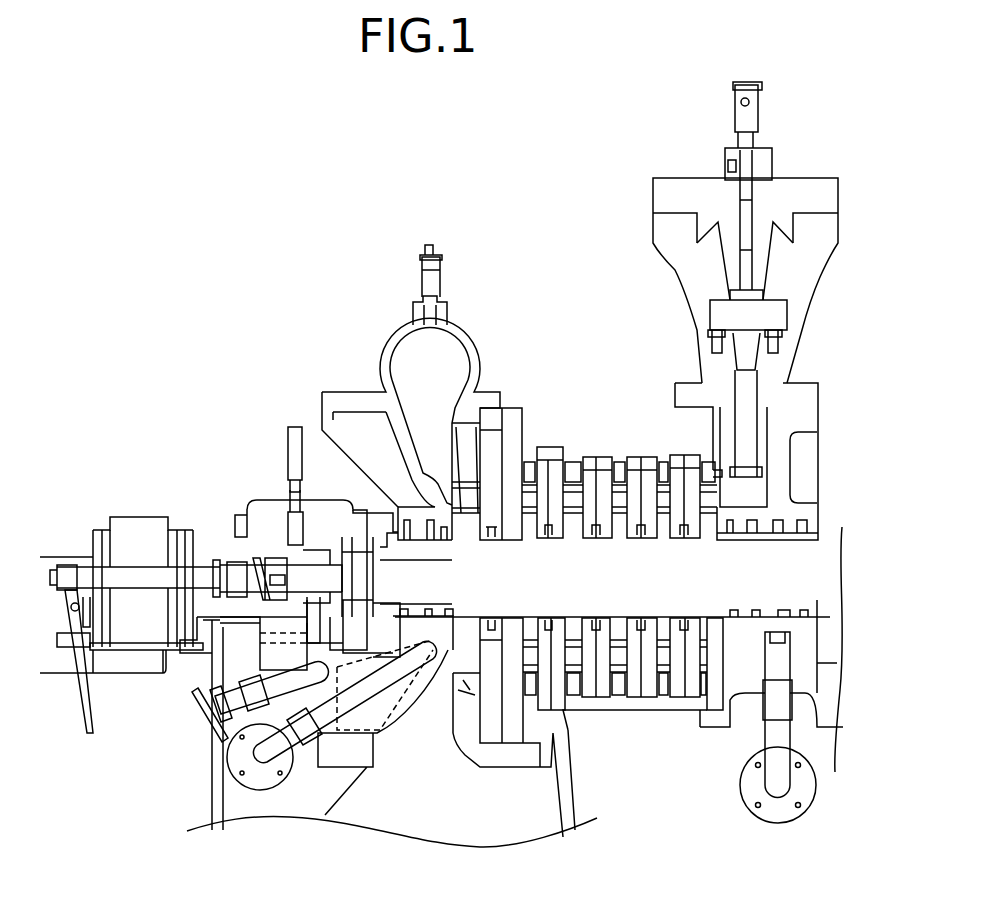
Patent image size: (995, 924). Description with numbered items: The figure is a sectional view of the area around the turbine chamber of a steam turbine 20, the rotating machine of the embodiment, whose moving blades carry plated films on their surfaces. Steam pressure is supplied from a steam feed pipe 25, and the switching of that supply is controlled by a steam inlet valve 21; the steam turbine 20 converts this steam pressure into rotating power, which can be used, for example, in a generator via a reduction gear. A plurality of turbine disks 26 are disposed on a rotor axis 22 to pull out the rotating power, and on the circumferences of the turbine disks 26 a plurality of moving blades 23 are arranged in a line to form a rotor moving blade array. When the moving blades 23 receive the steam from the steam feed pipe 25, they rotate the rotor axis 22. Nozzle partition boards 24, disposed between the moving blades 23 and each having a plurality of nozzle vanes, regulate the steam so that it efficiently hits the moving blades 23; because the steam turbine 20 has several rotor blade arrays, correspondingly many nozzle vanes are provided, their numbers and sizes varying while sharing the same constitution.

The steam turbine 20 is at (318, 246).
The steam inlet valve 21 is at (640, 227).
The rotor axis 22 is at (822, 562).
The moving blades 23 is at (710, 680).
The nozzle partition boards 24 is at (687, 458).
The steam feed pipe 25 is at (742, 398).
The turbine disks 26 is at (710, 622).